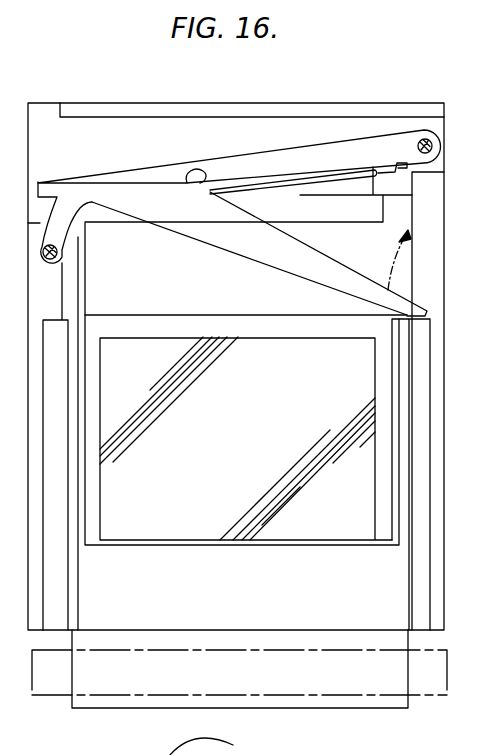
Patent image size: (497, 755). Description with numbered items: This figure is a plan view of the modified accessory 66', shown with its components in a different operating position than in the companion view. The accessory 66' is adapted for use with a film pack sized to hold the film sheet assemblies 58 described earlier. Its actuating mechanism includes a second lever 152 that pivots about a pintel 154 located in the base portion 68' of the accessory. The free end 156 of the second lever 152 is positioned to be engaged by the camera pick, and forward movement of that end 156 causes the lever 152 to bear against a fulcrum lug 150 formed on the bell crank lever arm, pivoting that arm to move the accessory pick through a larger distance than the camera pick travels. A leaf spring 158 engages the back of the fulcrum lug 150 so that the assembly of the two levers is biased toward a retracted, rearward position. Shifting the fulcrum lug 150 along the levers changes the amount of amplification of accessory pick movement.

The film sheet assembly 58 is at (244, 439).
The modified accessory 66' is at (252, 92).
The base portion 68' is at (236, 349).
The fulcrum lug 150 is at (193, 173).
The second lever 152 is at (274, 153).
The pintel 154 is at (425, 138).
The free end 156 is at (50, 182).
The leaf spring 158 is at (261, 186).